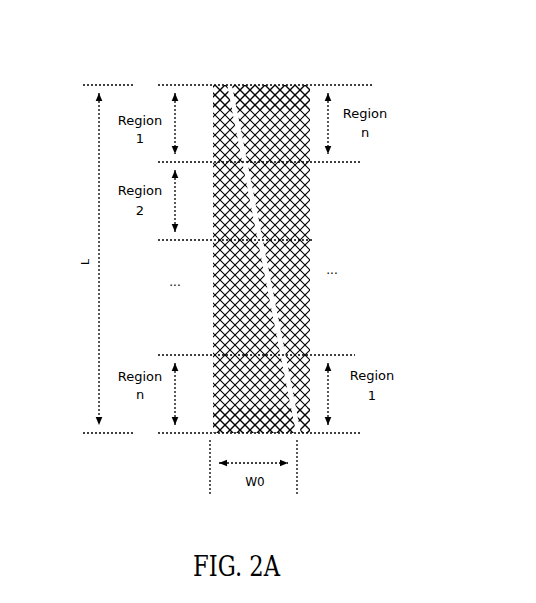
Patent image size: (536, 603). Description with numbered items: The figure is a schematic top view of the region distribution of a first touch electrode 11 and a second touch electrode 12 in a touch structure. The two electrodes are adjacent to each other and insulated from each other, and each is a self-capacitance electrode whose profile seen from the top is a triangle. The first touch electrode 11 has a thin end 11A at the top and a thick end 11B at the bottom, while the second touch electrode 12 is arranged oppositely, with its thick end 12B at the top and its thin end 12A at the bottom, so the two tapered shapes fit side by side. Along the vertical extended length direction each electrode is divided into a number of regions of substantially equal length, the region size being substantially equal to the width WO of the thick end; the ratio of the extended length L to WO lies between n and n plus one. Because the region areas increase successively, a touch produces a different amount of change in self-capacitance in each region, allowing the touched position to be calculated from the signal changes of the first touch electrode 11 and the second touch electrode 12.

The first touch electrode 11 is at (213, 313).
The thin end of first touch electrode 11A is at (217, 84).
The thick end of first touch electrode 11B is at (233, 442).
The second touch electrode 12 is at (303, 222).
The thin end of second touch electrode 12A is at (308, 437).
The thick end of second touch electrode 12B is at (270, 83).